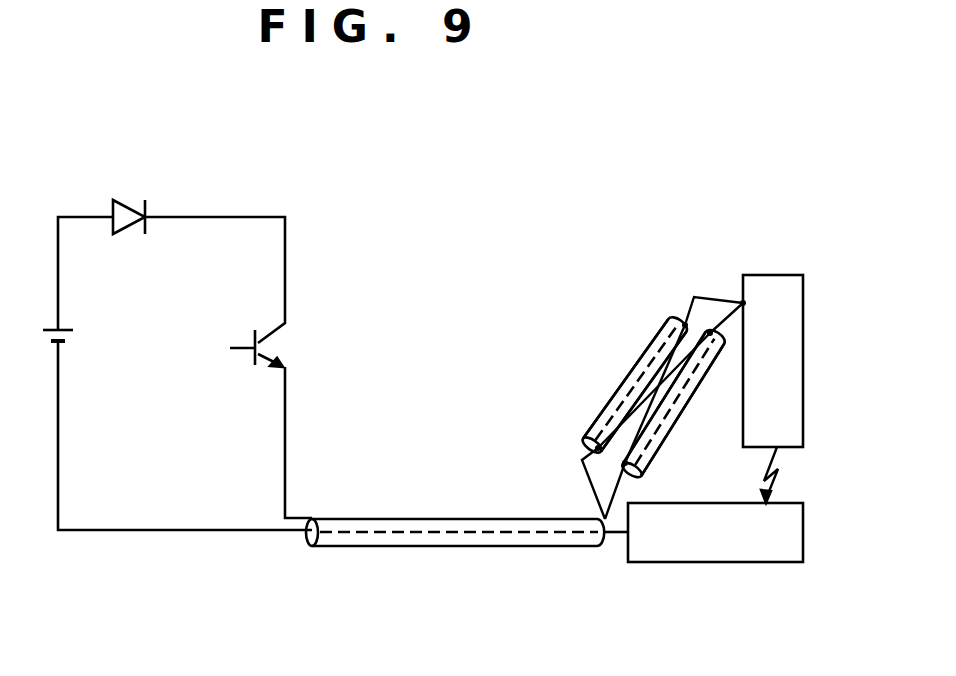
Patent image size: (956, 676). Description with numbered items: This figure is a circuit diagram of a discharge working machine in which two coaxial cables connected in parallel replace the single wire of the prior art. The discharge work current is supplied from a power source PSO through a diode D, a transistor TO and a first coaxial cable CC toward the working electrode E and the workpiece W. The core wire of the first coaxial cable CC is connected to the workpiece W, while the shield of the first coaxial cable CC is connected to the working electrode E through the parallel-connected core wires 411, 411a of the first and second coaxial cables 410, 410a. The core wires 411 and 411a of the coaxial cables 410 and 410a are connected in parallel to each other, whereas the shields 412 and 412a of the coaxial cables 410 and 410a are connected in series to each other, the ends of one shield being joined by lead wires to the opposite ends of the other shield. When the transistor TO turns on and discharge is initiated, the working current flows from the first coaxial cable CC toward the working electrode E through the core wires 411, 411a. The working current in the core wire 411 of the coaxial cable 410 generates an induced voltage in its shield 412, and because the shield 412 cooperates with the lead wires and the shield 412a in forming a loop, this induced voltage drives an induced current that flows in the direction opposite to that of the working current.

The diode D is at (128, 200).
The power source PSO is at (70, 325).
The transistor TO is at (278, 345).
The coaxial cable CC is at (425, 518).
The working electrode E is at (790, 275).
The workpiece W is at (797, 503).
The first coaxial cable 410 is at (680, 420).
The second coaxial cable 410a is at (630, 372).
The core wire 411 is at (698, 369).
The core wire 411a is at (662, 341).
The shield 412 is at (660, 453).
The shield 412a is at (600, 413).